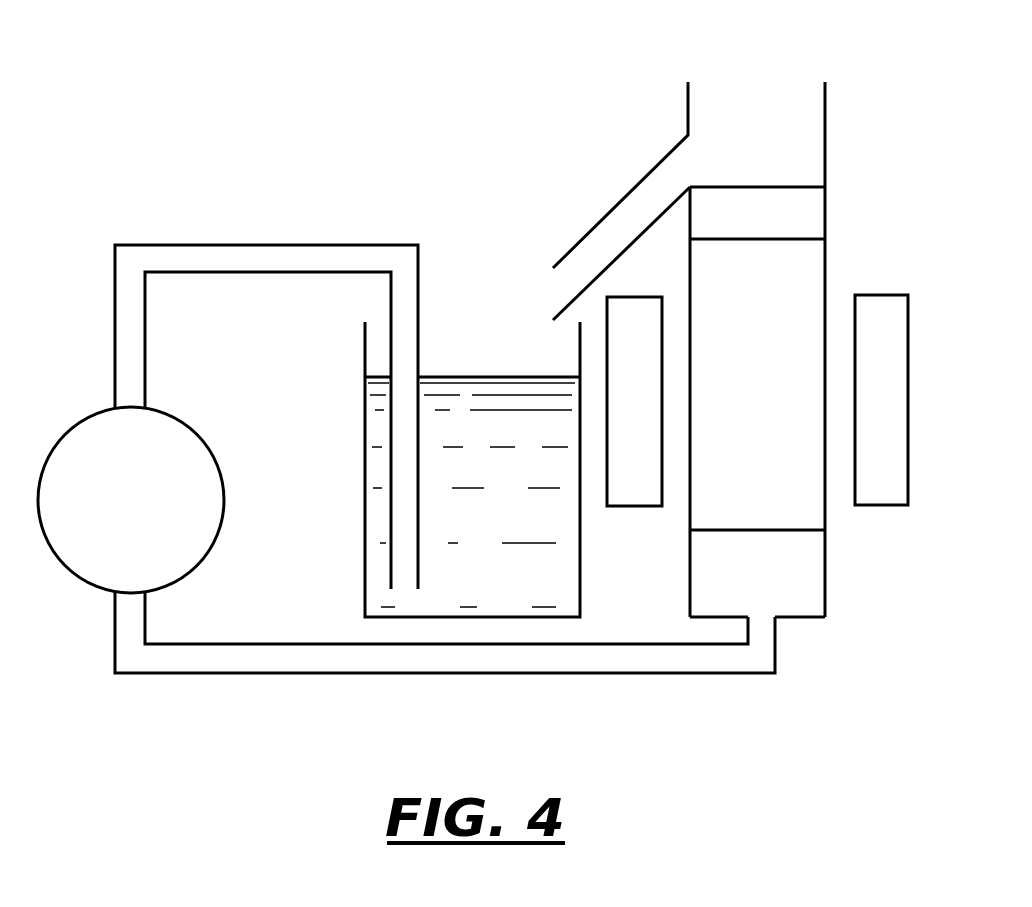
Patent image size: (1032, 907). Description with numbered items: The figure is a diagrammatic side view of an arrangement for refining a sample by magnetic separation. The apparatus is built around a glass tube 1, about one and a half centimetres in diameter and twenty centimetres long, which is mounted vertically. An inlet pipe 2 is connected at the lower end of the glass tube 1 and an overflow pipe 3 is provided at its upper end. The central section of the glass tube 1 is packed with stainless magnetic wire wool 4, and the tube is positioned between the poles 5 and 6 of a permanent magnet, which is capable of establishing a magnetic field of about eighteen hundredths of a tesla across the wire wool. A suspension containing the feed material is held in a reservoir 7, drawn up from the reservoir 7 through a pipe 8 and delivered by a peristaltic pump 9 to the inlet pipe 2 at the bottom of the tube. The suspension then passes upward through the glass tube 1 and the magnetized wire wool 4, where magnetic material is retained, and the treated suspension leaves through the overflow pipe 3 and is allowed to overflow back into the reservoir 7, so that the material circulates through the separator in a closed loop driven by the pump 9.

The glass tube 1 is at (832, 575).
The inlet pipe 2 is at (487, 674).
The overflow pipe 3 is at (627, 194).
The stainless magnetic wire wool 4 is at (807, 285).
The pole of permanent magnet 5 is at (633, 507).
The pole of permanent magnet 6 is at (910, 430).
The reservoir 7 is at (366, 538).
The pipe 8 is at (325, 246).
The peristaltic pump 9 is at (86, 419).